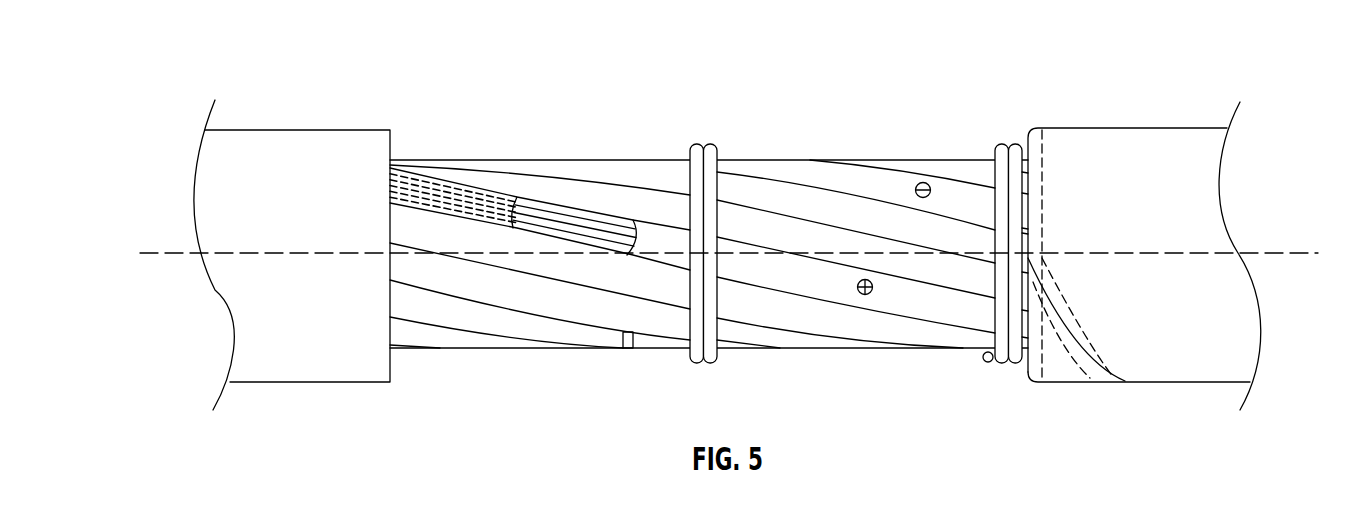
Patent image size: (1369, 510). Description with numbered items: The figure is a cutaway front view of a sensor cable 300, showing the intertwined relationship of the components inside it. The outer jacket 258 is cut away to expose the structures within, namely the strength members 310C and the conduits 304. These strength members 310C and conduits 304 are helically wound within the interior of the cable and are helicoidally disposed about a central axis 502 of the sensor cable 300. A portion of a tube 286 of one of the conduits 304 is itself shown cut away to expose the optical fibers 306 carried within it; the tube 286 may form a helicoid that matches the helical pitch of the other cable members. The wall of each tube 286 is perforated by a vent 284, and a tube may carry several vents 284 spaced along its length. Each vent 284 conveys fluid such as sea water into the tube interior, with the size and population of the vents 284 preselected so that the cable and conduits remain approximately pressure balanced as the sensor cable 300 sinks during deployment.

The sensor cable 300 is at (266, 80).
The outer jacket 258 is at (352, 143).
The optical fibers 306 is at (557, 220).
The strength members 310C is at (803, 207).
The tube 286 is at (833, 177).
The conduits 304 is at (971, 177).
The vent 284 is at (924, 182).
The central axis 502 is at (1267, 253).